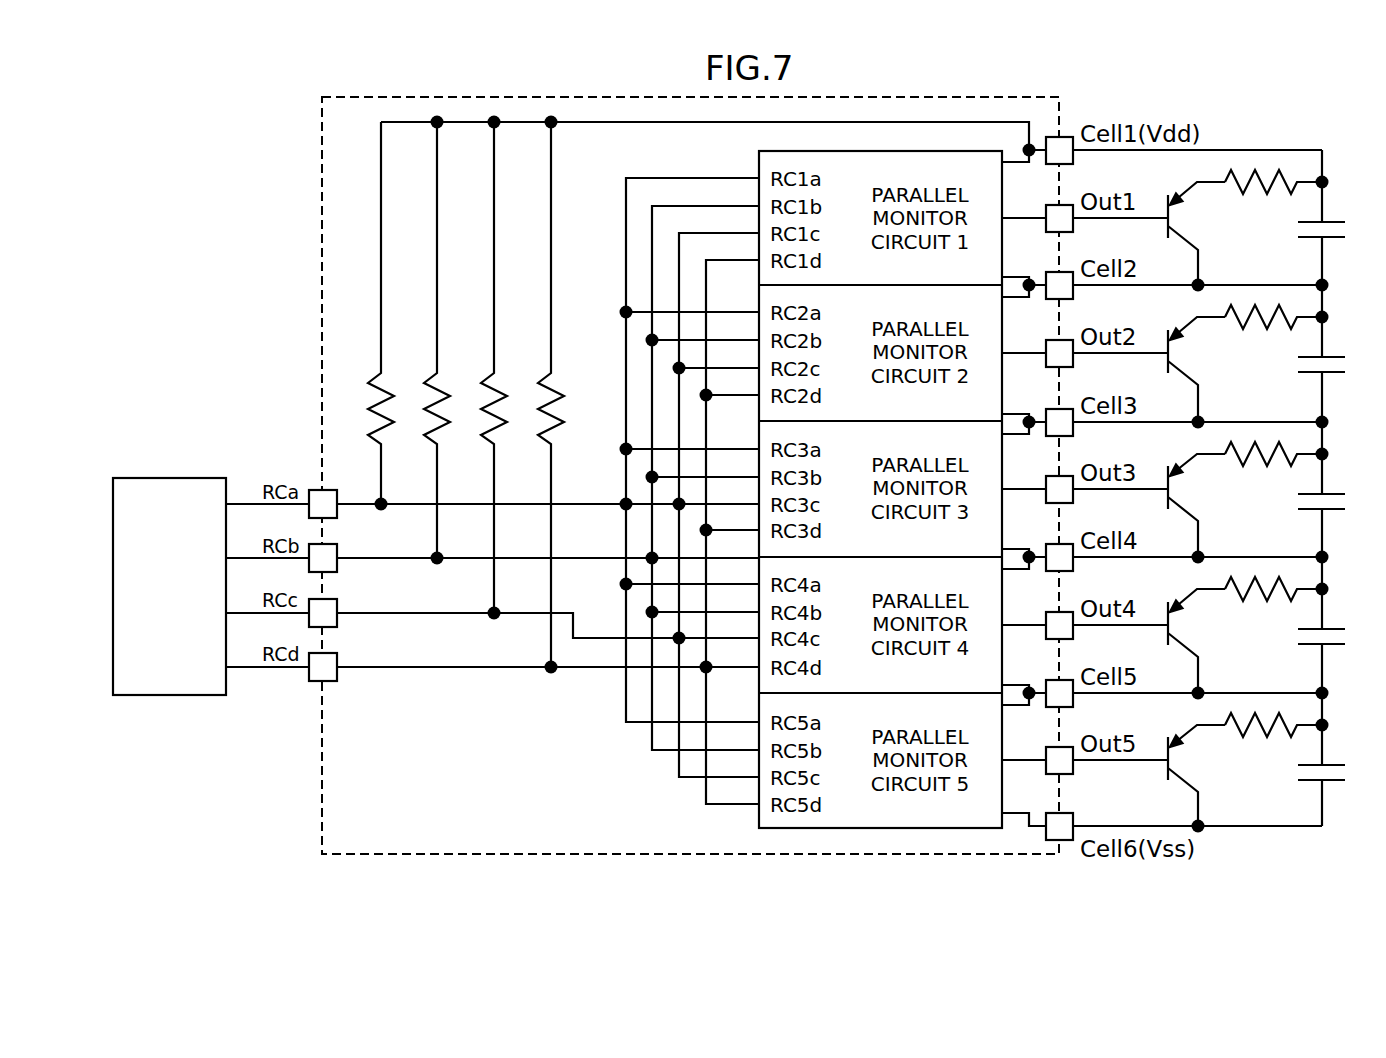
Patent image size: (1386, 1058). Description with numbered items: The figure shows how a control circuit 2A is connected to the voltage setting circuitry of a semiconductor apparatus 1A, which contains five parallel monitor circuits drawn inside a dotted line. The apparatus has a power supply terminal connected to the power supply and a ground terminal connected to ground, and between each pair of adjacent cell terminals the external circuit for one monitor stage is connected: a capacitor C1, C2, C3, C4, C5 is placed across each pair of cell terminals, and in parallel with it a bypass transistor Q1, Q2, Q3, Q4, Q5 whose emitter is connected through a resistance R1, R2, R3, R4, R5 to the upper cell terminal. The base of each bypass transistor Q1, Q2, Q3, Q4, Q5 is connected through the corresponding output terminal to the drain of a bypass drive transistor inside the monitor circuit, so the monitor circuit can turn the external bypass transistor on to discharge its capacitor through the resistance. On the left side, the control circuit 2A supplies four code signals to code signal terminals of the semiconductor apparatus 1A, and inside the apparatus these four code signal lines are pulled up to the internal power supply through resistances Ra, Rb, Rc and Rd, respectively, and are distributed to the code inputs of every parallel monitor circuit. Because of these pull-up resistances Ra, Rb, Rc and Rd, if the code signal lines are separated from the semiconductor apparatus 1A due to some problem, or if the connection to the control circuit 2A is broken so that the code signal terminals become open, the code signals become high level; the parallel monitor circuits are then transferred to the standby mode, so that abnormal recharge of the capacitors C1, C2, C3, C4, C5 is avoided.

The semiconductor apparatus 1A is at (320, 132).
The control circuit 2A is at (170, 478).
The resistance Ra is at (390, 313).
The resistance Rb is at (446, 340).
The resistance Rc is at (502, 367).
The resistance Rd is at (560, 394).
The bypass transistor Q1 is at (1149, 225).
The bypass transistor Q2 is at (1149, 361).
The bypass transistor Q3 is at (1149, 497).
The bypass transistor Q4 is at (1149, 632).
The bypass transistor Q5 is at (1149, 767).
The resistance R1 is at (1273, 197).
The resistance R2 is at (1273, 332).
The resistance R3 is at (1273, 469).
The resistance R4 is at (1273, 604).
The resistance R5 is at (1273, 740).
The capacitor C1 is at (1338, 232).
The capacitor C2 is at (1338, 367).
The capacitor C3 is at (1338, 504).
The capacitor C4 is at (1338, 639).
The capacitor C5 is at (1338, 775).